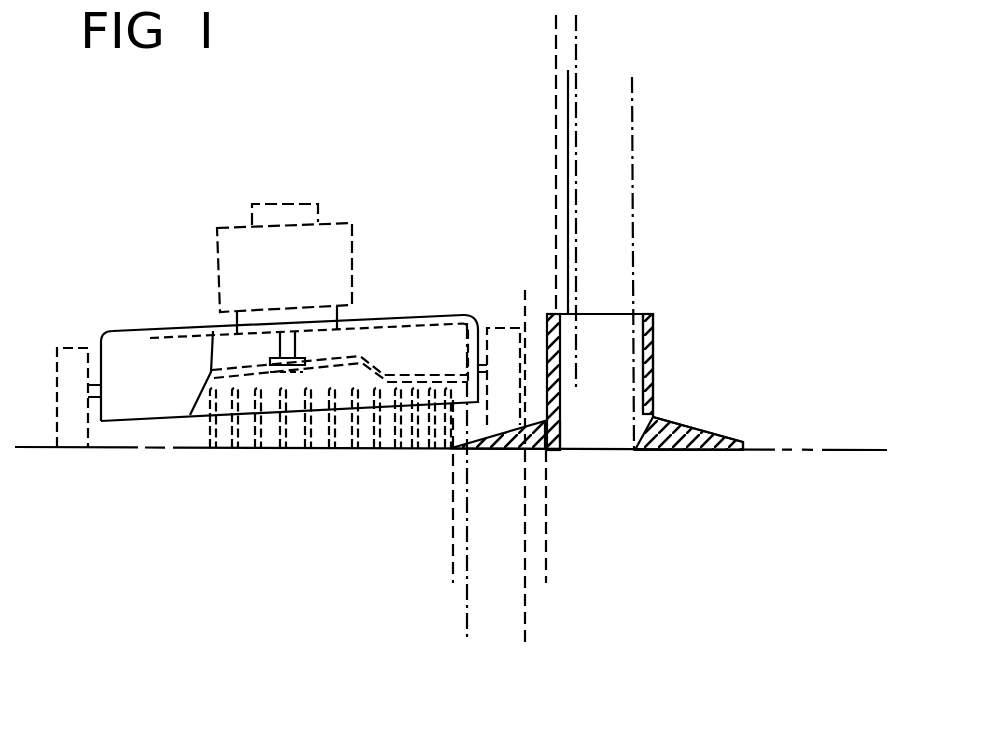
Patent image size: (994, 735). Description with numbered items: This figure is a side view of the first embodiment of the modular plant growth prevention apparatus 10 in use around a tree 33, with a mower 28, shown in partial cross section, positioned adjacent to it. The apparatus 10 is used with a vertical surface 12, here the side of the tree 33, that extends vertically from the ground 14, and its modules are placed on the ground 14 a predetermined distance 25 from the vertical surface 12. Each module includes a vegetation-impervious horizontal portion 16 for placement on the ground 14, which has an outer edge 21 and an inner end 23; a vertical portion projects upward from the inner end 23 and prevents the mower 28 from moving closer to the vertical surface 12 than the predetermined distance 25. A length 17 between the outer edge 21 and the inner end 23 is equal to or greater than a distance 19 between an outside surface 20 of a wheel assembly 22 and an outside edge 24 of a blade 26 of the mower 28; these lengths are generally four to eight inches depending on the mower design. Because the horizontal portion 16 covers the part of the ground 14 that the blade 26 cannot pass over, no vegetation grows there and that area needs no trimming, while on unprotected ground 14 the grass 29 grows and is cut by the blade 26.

The modular plant growth prevention apparatus 10 is at (668, 268).
The vertical surface 12 is at (568, 143).
The ground 14 is at (278, 532).
The vegetation-impervious horizontal portion 16 is at (541, 422).
The length 17 is at (452, 568).
The distance 19 is at (466, 631).
The outside surface 20 is at (527, 337).
The outer edge 21 is at (450, 448).
The wheel assembly 22 is at (68, 355).
The inner end 23 is at (540, 418).
The outside edge 24 is at (460, 355).
The predetermined distance 25 is at (555, 31).
The blade 26 is at (403, 374).
The mower 28 is at (217, 228).
The grass 29 is at (223, 440).
The tree 33 is at (617, 87).